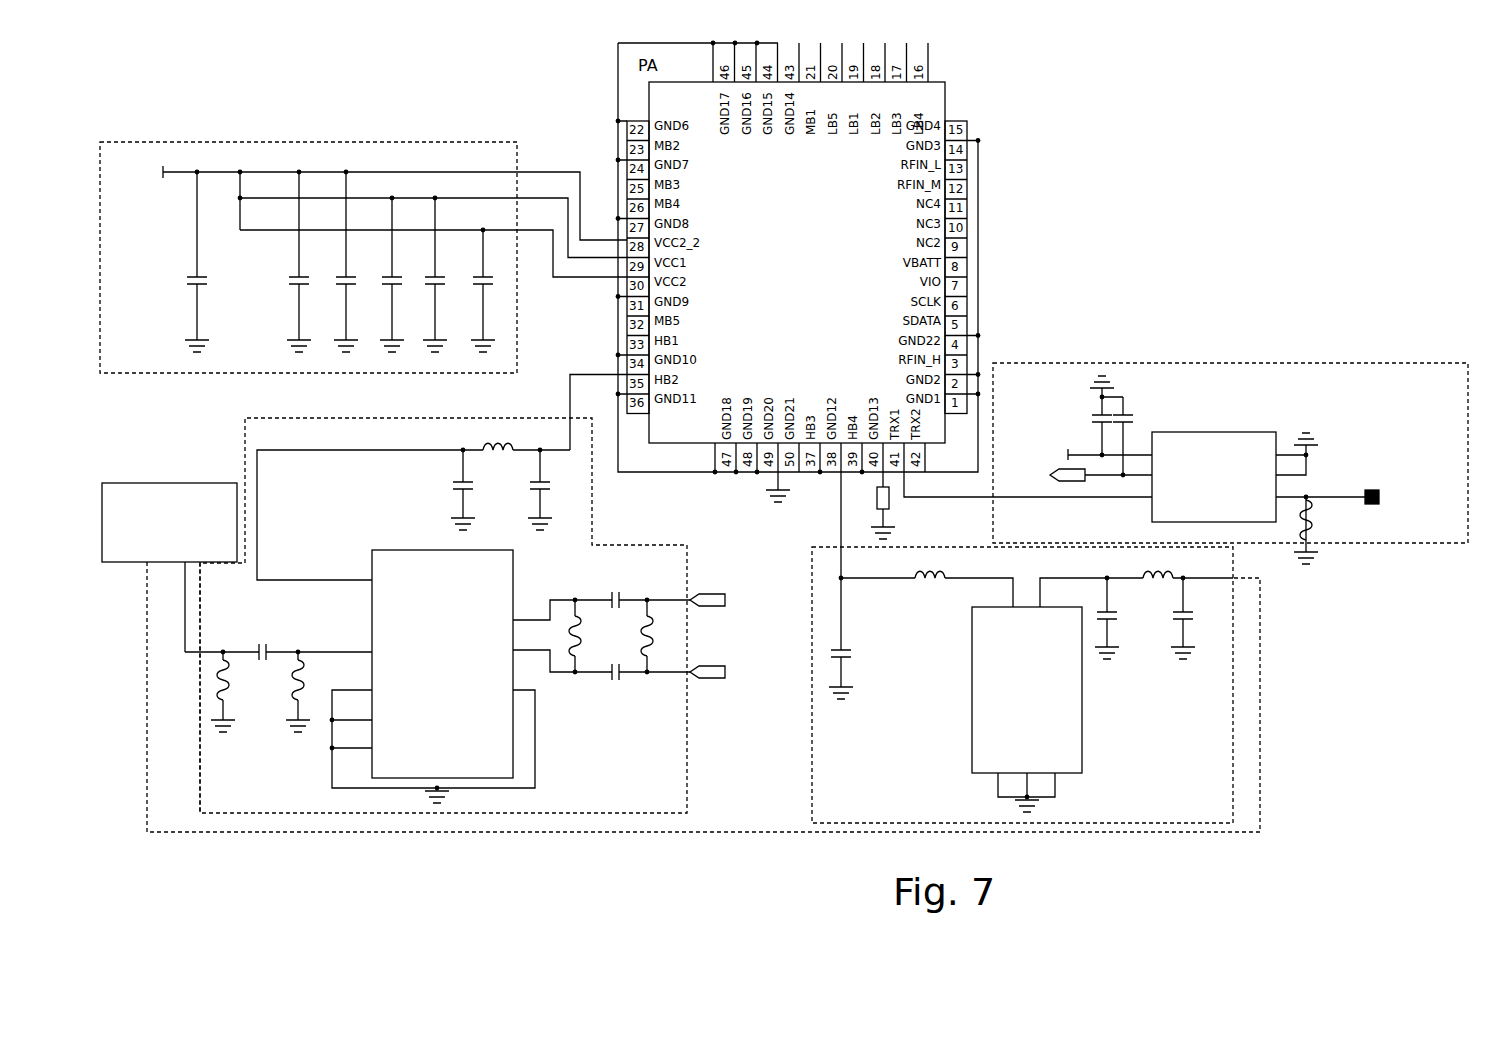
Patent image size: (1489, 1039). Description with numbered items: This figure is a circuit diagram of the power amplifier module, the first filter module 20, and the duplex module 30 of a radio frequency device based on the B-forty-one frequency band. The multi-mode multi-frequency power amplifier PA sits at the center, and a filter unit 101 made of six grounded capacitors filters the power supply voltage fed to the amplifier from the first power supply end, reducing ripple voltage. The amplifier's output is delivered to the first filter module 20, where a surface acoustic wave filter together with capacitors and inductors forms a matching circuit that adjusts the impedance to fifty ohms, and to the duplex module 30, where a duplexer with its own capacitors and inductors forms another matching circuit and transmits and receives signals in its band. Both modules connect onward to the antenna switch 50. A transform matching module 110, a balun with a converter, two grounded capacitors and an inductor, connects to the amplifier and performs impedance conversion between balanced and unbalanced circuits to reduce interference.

The filter unit 101 is at (232, 142).
The transform matching module 110 is at (1187, 363).
The antenna switch 50 is at (160, 483).
The duplex module 30 is at (333, 418).
The first filter module 20 is at (812, 578).